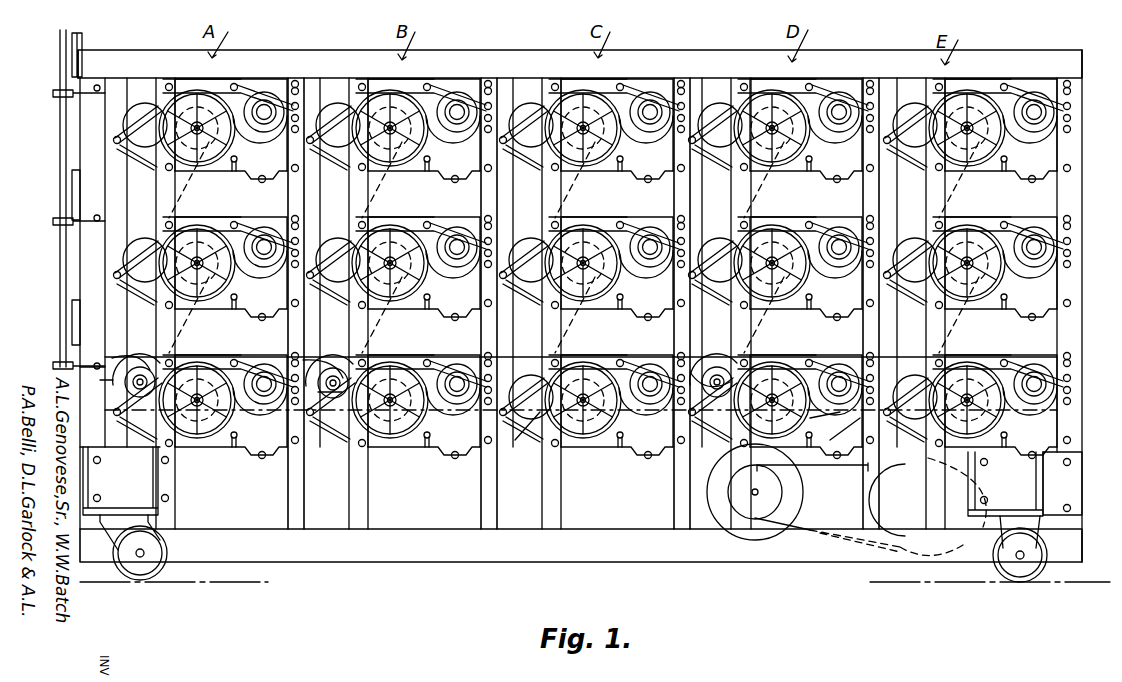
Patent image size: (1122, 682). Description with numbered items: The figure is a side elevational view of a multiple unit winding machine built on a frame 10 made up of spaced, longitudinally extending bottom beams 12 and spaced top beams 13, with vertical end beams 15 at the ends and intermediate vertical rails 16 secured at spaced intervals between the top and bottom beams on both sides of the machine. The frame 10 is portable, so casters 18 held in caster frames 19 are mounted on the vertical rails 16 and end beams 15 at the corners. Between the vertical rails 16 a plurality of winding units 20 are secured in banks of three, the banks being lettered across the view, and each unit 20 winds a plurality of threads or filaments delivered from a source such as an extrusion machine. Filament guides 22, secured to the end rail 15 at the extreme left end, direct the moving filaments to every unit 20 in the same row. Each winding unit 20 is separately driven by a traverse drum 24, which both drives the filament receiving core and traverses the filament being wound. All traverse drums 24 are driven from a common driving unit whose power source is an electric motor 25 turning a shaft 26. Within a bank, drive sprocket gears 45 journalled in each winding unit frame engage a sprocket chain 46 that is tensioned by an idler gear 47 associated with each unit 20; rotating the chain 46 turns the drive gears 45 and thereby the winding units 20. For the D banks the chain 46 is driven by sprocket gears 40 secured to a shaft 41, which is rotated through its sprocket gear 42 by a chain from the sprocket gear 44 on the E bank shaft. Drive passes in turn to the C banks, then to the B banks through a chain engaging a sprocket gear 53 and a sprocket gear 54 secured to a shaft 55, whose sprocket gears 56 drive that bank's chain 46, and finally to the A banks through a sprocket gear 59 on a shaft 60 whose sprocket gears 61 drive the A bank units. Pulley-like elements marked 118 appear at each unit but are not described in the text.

The frame 10 is at (702, 43).
The bottom beams 12 is at (480, 562).
The top beams 13 is at (497, 70).
The vertical end beams 15 is at (78, 383).
The intermediate vertical rails 16 is at (158, 322).
The casters 18 is at (150, 570).
The caster frames 19 is at (125, 494).
The winding units 20 is at (240, 178).
The filament guides 22 is at (72, 69).
The traverse drum 24 is at (205, 166).
The electric motor 25 is at (722, 470).
The shaft 26 is at (757, 492).
The sprocket gears 40 is at (713, 357).
The shaft 41 is at (717, 375).
The sprocket gear 42 is at (692, 374).
The sprocket gear 44 is at (850, 420).
The drive sprocket gears 45 is at (152, 165).
The sprocket chain 46 is at (136, 238).
The idler gear 47 is at (148, 116).
The sprocket gear 53 is at (518, 442).
The sprocket gear 54 is at (338, 358).
The shaft 55 is at (333, 398).
The sprocket gears 56 is at (333, 368).
The sprocket gear 59 is at (128, 395).
The shaft 60 is at (125, 382).
The sprocket gears 61 is at (143, 362).
The pulley 118 is at (268, 135).